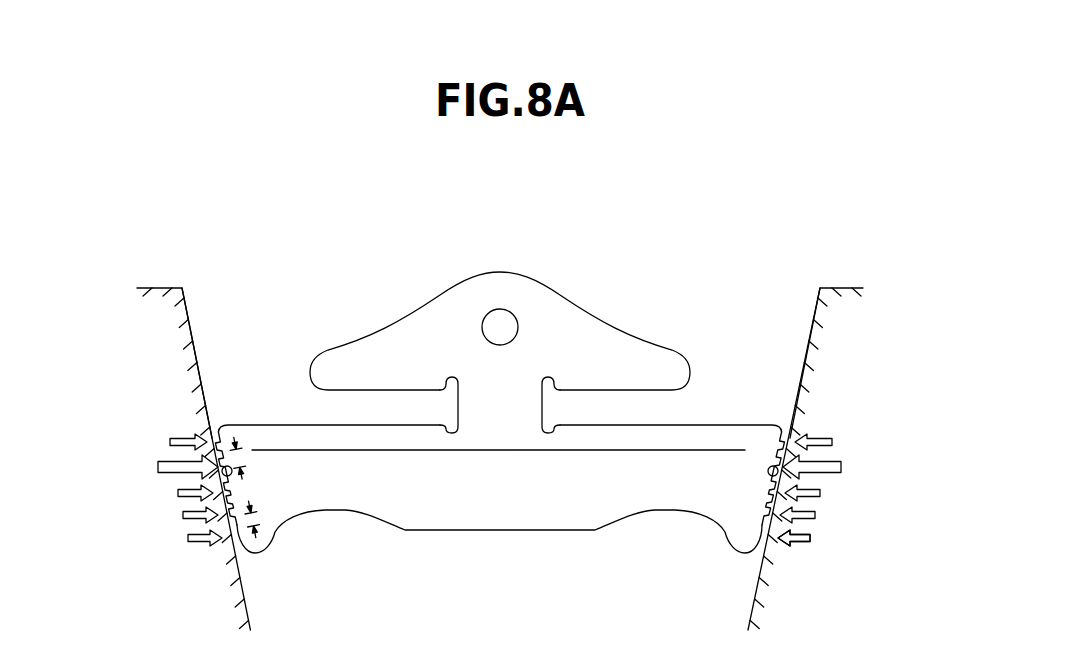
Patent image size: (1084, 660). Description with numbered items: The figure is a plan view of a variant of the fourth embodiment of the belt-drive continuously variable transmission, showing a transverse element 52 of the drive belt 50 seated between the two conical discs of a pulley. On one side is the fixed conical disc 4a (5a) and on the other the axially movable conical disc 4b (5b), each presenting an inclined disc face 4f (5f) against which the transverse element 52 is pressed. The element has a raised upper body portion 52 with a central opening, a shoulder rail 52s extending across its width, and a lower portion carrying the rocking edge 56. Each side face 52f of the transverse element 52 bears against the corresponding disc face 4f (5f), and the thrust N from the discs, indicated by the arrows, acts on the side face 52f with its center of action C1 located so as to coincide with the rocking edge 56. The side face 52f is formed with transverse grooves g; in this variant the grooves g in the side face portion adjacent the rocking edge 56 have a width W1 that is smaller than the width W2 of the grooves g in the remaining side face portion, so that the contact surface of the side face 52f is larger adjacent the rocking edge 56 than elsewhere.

The conical disc 4a is at (832, 459).
The conical disc 5a is at (916, 337).
The conical disc 4b is at (169, 459).
The conical disc 5b is at (163, 334).
The conical disc face 4f is at (506, 325).
The conical disc face 5f is at (190, 320).
The drive belt 50 is at (499, 386).
The transverse element 52 is at (415, 312).
The side face 52f is at (218, 420).
The shoulder rail portion 52s is at (303, 420).
The rocking edge 56 is at (470, 452).
The groove width W1 is at (245, 460).
The groove width W2 is at (252, 519).
The center of action of thrust C1 is at (216, 471).
The thrust N is at (503, 490).
The groove g is at (773, 523).